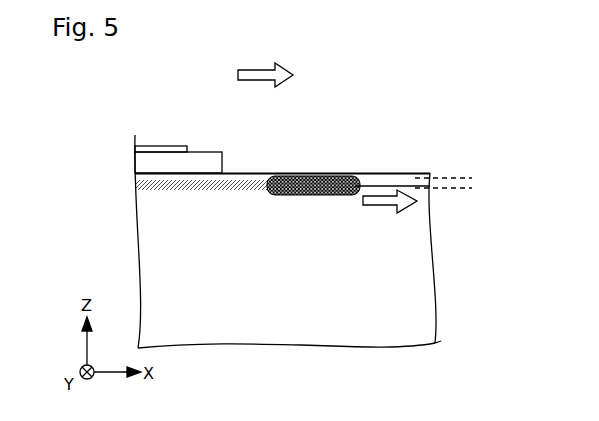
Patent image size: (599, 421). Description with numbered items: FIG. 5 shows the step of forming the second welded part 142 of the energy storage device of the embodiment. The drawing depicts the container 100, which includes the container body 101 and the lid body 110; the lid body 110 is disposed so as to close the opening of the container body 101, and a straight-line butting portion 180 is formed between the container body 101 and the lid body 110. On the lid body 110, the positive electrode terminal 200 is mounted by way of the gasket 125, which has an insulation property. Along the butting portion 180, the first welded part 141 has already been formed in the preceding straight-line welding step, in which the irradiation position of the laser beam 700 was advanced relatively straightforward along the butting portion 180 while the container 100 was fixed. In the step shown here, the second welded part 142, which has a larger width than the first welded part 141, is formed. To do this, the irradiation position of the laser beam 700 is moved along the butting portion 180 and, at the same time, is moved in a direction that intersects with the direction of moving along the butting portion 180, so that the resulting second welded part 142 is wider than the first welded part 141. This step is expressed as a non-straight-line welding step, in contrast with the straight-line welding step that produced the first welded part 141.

The container 100 is at (445, 123).
The container body 101 is at (272, 294).
The lid body 110 is at (398, 173).
The gasket 125 is at (207, 152).
The first welded part 141 is at (202, 190).
The second welded part 142 is at (333, 196).
The butting portion 180 is at (476, 176).
The positive electrode terminal 200 is at (160, 146).
The laser beam 700 is at (362, 176).